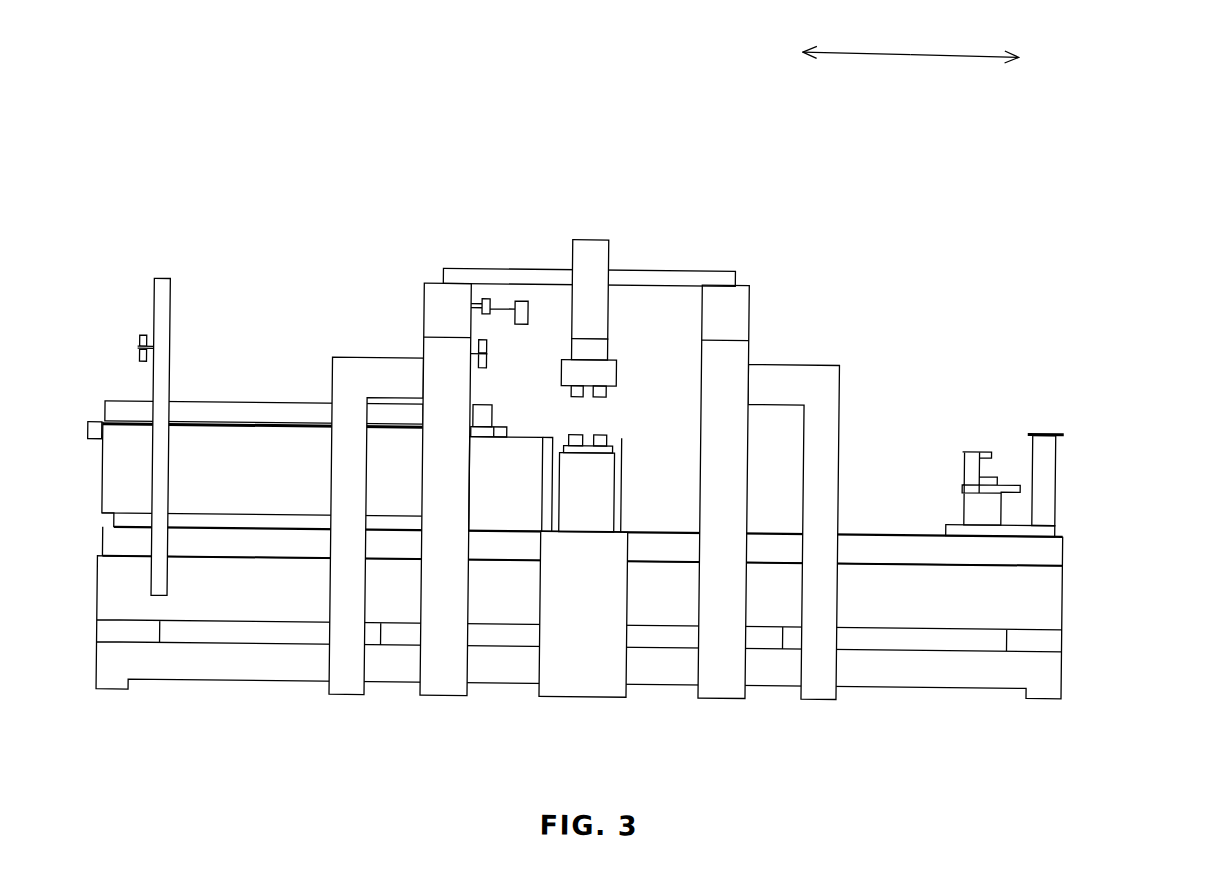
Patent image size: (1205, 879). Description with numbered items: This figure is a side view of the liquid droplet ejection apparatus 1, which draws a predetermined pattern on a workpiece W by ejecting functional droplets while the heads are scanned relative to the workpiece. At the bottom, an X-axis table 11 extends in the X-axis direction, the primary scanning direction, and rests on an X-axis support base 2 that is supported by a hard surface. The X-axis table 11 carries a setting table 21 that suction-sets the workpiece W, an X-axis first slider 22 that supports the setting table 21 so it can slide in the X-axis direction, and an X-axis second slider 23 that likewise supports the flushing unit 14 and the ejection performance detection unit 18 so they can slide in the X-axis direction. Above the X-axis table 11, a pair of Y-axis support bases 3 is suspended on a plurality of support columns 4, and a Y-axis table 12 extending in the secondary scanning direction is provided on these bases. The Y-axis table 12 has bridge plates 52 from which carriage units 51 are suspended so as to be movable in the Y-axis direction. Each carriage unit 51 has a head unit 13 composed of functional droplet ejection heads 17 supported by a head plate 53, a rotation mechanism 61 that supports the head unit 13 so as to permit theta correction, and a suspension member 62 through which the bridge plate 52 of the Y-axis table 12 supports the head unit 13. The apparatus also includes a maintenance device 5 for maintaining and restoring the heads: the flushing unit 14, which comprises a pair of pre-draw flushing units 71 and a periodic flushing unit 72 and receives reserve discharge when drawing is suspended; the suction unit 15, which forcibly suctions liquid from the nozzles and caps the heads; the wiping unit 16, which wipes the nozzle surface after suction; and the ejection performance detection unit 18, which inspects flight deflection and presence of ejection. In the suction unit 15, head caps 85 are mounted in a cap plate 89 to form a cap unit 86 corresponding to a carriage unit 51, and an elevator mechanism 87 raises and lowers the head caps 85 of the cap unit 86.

The liquid droplet ejection apparatus 1 is at (633, 106).
The X-axis support base 2 is at (108, 603).
The Y-axis support base 3 is at (429, 304).
The support column 4 is at (349, 686).
The maintenance device 5 is at (547, 574).
The X-axis table 11 is at (617, 613).
The Y-axis table 12 is at (584, 412).
The head unit 13 is at (563, 401).
The flushing unit 14 is at (36, 394).
The suction unit 15 is at (582, 536).
The wiping unit 16 is at (602, 473).
The functional droplet ejection head 17 is at (575, 398).
The ejection performance detection unit 18 is at (968, 436).
The setting table 21 is at (111, 461).
The X-axis first slider 22 is at (117, 525).
The X-axis second slider 23 is at (949, 525).
The carriage unit 51 is at (614, 293).
The bridge plate 52 is at (677, 271).
The head plate 53 is at (606, 372).
The rotation mechanism 61 is at (596, 349).
The suspension member 62 is at (605, 312).
The pre-draw flushing unit 71 is at (86, 437).
The periodic flushing unit 72 is at (1038, 427).
The head cap 85 is at (596, 435).
The cap unit 86 is at (596, 471).
The elevator mechanism 87 is at (607, 478).
The cap plate 89 is at (610, 452).
The workpiece W is at (243, 406).